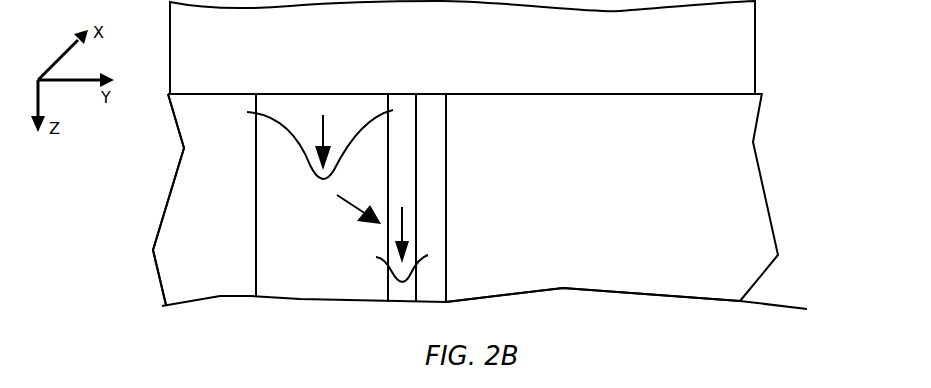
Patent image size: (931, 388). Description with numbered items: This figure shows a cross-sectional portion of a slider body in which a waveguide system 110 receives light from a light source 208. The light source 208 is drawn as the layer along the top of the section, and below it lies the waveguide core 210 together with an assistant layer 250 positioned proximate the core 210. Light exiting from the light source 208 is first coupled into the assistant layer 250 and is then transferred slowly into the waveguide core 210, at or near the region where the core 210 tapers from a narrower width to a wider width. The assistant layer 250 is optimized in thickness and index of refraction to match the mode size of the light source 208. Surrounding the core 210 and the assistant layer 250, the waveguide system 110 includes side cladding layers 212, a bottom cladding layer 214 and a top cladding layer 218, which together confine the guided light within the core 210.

The waveguide system 110 is at (762, 155).
The light source 208 is at (748, 45).
The waveguide core 210 is at (398, 302).
The side cladding layers 212 is at (441, 297).
The bottom cladding layer 214 is at (184, 306).
The top cladding layer 218 is at (525, 296).
The assistant layer 250 is at (310, 300).